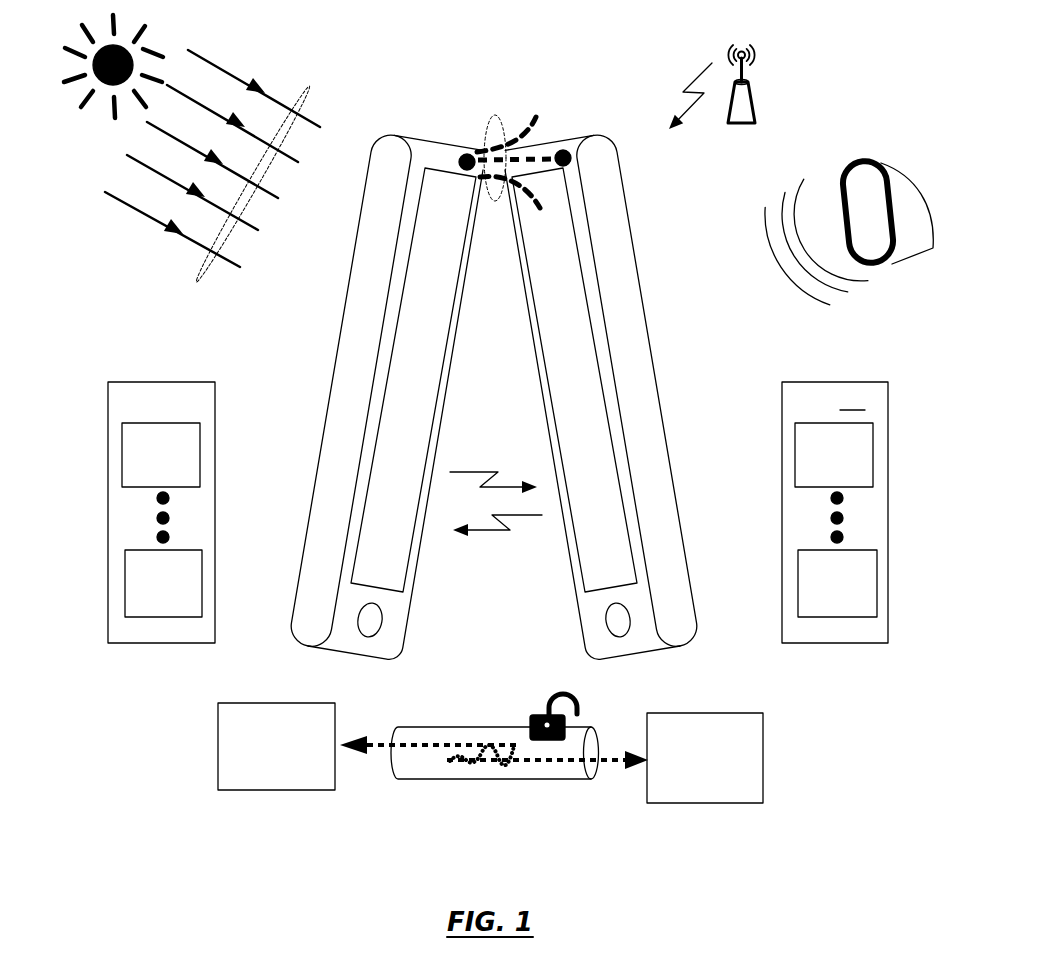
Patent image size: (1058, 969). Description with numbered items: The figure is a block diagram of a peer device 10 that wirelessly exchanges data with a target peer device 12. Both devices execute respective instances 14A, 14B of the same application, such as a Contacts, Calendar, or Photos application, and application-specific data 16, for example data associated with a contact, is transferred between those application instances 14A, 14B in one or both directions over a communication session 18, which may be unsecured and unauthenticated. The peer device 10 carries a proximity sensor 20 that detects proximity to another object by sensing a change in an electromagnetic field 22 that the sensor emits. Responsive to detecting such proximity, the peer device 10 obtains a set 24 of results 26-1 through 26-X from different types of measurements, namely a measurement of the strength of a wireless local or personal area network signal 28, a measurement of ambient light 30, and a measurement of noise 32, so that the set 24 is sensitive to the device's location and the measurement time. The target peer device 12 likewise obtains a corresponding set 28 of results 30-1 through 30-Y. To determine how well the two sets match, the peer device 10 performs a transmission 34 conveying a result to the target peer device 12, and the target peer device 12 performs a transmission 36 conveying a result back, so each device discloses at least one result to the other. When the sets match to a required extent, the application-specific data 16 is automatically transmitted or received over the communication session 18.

The peer device 10 is at (332, 387).
The target peer device 12 is at (662, 390).
The application instance 14A is at (258, 779).
The application instance 14B is at (687, 790).
The application-specific data 16 is at (373, 750).
The communication session 18 is at (562, 779).
The proximity sensor 20 is at (464, 156).
The electromagnetic field 22 is at (495, 116).
The set of results 24 is at (191, 410).
The result 26-1 is at (140, 473).
The result 26-X is at (141, 601).
The wireless local or personal area network signal 28 is at (712, 63).
The ambient light 30 is at (310, 87).
The result 30-1 is at (813, 473).
The result 30-Y is at (815, 601).
The noise 32 is at (767, 233).
The transmission 34 is at (480, 471).
The transmission 36 is at (490, 531).